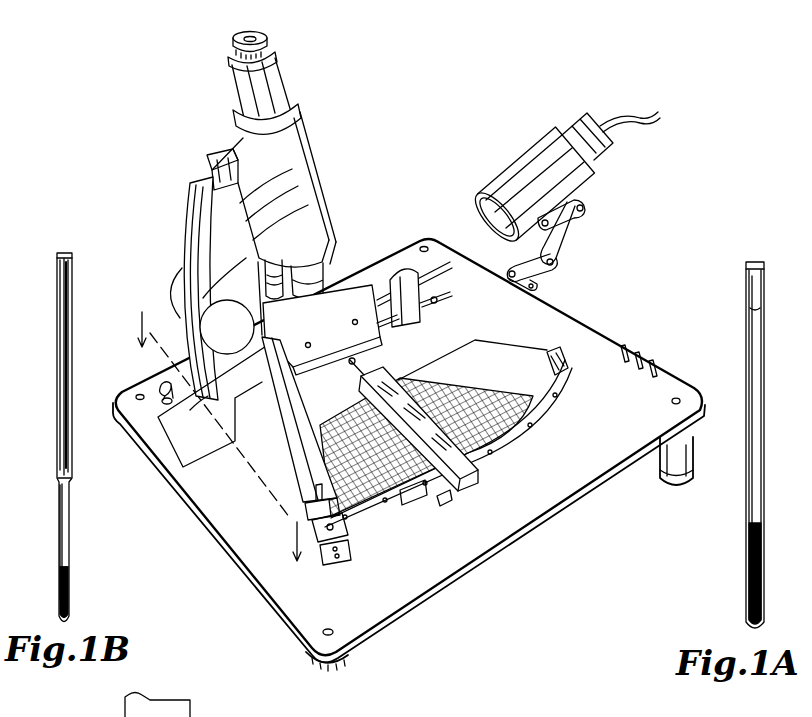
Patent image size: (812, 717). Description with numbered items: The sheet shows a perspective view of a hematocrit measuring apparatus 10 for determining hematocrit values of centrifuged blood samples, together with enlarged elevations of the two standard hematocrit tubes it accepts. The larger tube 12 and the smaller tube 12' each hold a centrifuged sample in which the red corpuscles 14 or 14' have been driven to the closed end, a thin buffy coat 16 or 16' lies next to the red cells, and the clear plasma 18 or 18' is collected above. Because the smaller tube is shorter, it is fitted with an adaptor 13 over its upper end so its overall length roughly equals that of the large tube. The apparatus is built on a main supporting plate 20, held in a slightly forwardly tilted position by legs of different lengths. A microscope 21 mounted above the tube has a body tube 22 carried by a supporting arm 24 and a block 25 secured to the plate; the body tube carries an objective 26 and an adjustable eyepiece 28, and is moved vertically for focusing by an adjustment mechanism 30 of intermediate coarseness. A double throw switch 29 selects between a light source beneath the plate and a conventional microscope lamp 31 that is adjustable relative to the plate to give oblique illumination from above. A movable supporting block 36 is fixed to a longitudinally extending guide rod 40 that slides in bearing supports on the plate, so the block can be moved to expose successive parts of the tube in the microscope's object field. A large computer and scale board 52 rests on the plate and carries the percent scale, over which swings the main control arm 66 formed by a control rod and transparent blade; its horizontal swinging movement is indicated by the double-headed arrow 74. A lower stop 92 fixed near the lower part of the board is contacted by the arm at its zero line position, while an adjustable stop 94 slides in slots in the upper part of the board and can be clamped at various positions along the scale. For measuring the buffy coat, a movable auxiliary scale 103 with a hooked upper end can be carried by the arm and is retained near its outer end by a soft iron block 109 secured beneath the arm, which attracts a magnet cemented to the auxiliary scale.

In FIG. 1, the hematocrit measuring apparatus 10 is at (409, 373).
In FIG. 1A, the hematocrit tube 12 is at (734, 429).
In FIG. 1B, the adaptor 13 is at (62, 394).
In FIG. 1A, the red corpuscles 14 is at (735, 573).
In FIG. 1A, the buffy coat 16 is at (734, 419).
In FIG. 1A, the plasma 18 is at (738, 447).
In FIG. 1B, the hematocrit tube 12' is at (92, 437).
In FIG. 1B, the red corpuscles 14' is at (44, 592).
In FIG. 1B, the buffy coat 16' is at (41, 560).
In FIG. 1B, the plasma 18' is at (36, 549).
In FIG. 1, the main supporting plate 20 is at (580, 491).
In FIG. 1, the microscope 21 is at (241, 260).
In FIG. 1, the body tube 22 is at (310, 176).
In FIG. 1, the supporting arm 24 is at (217, 229).
In FIG. 1, the block 25 is at (208, 455).
In FIG. 1, the objective 26 is at (357, 382).
In FIG. 1, the adjustable eyepiece 28 is at (268, 37).
In FIG. 1, the double throw switch 29 is at (163, 396).
In FIG. 1, the adjustment mechanism 30 is at (168, 290).
In FIG. 1, the microscope lamp 31 is at (530, 160).
In FIG. 1, the movable supporting block 36 is at (356, 296).
In FIG. 1, the guide rod 40 is at (446, 292).
In FIG. 1, the computer and scale board 52 is at (483, 347).
In FIG. 1, the main control arm 66 is at (476, 462).
In FIG. 1, the double-headed arrow 74 is at (515, 485).
In FIG. 1, the lower stop 92 is at (349, 550).
In FIG. 1, the adjustable stop 94 is at (570, 352).
In FIG. 1, the auxiliary scale 103 is at (424, 496).
In FIG. 1, the soft iron block 109 is at (456, 505).